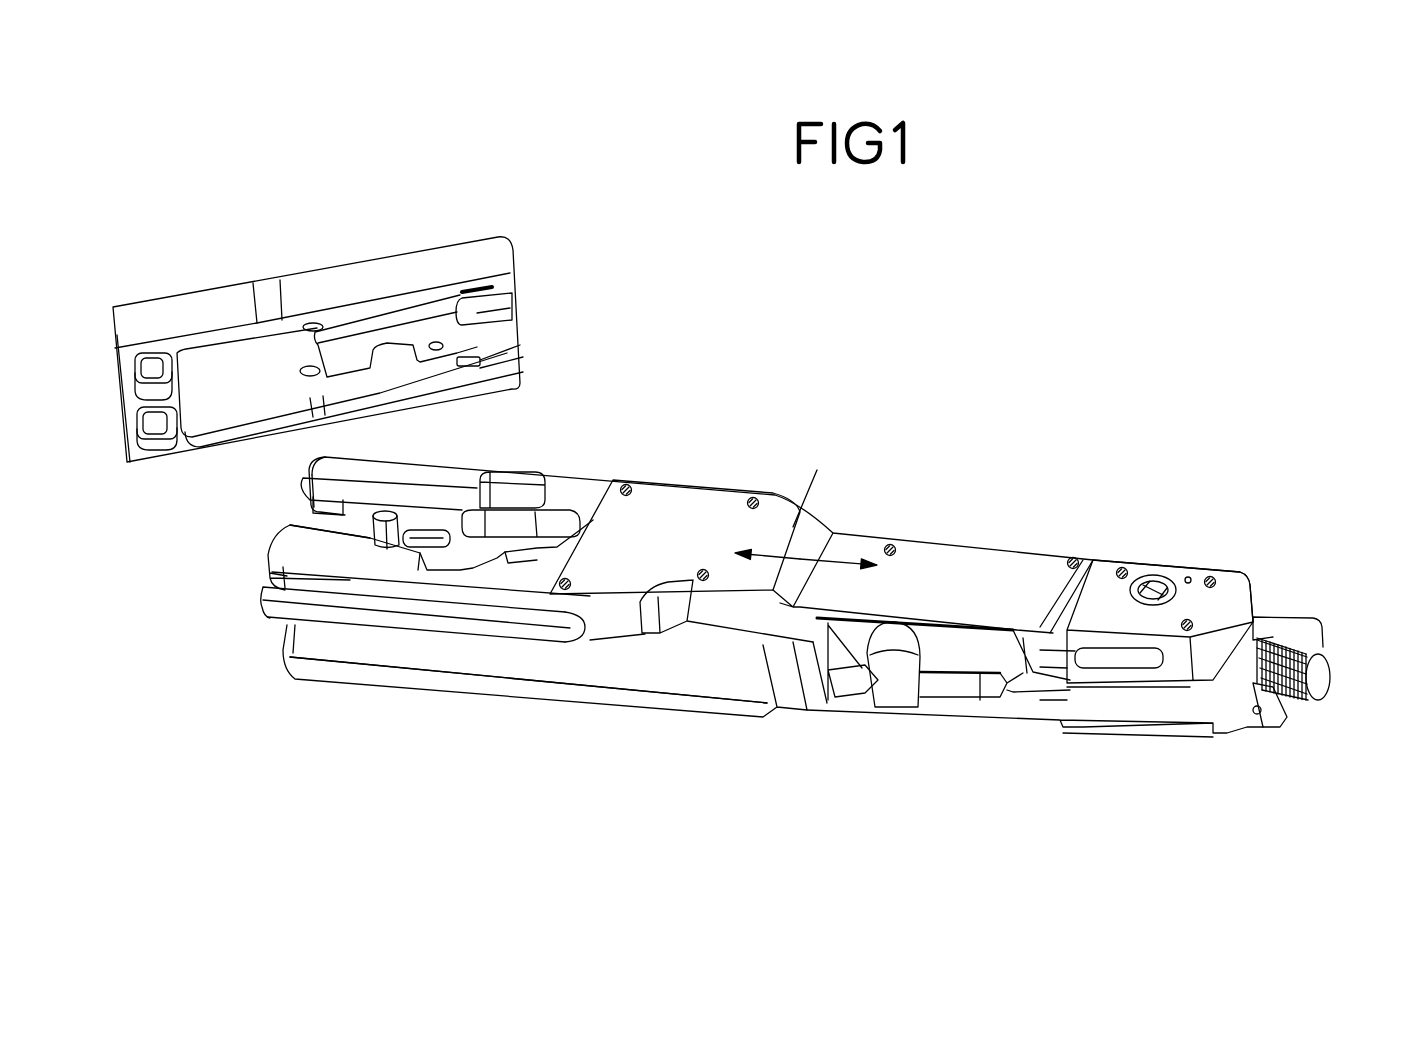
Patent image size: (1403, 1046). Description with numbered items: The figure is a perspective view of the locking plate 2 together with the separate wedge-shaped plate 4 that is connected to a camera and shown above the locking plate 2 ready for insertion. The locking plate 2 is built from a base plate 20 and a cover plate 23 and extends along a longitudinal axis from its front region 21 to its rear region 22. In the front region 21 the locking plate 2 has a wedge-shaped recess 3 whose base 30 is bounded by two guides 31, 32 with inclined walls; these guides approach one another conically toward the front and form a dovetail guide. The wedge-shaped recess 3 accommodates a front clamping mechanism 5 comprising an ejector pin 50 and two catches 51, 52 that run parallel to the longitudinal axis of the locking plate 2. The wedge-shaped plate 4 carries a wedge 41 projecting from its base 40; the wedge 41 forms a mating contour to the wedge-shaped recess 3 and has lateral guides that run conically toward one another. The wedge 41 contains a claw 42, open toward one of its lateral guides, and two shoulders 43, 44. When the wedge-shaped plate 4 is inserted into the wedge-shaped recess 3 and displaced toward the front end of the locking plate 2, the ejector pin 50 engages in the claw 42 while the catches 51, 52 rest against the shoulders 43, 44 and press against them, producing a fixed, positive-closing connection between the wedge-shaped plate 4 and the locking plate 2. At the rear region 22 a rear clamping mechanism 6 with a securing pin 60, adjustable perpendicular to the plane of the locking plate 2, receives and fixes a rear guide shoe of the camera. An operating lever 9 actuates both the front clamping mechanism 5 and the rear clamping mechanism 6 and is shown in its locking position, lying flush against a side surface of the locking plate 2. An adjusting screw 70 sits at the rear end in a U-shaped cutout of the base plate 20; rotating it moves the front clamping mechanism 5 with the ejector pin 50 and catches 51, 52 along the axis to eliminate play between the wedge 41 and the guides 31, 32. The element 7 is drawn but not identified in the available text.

The locking plate 2 is at (867, 506).
The wedge-shaped recess 3 is at (281, 515).
The wedge-shaped plate 4 is at (378, 310).
The front clamping mechanism 5 is at (531, 457).
The rear clamping mechanism 6 is at (1206, 538).
The end cap 7 is at (1297, 588).
The operating lever 9 is at (963, 652).
The base plate 20 is at (697, 668).
The front region 21 is at (385, 648).
The rear region 22 is at (1103, 703).
The cover plate 23 is at (686, 510).
The base 30 is at (432, 525).
The guide 31 is at (347, 537).
The guide 32 is at (307, 483).
The base 40 is at (205, 365).
The wedge 41 is at (366, 328).
The claw 42 is at (420, 360).
The shoulder 43 is at (515, 277).
The shoulder 44 is at (458, 353).
The ejector pin 50 is at (385, 540).
The catch 51 is at (520, 510).
The catch 52 is at (463, 580).
The securing pin 60 is at (1150, 578).
The adjusting screw 70 is at (1322, 645).